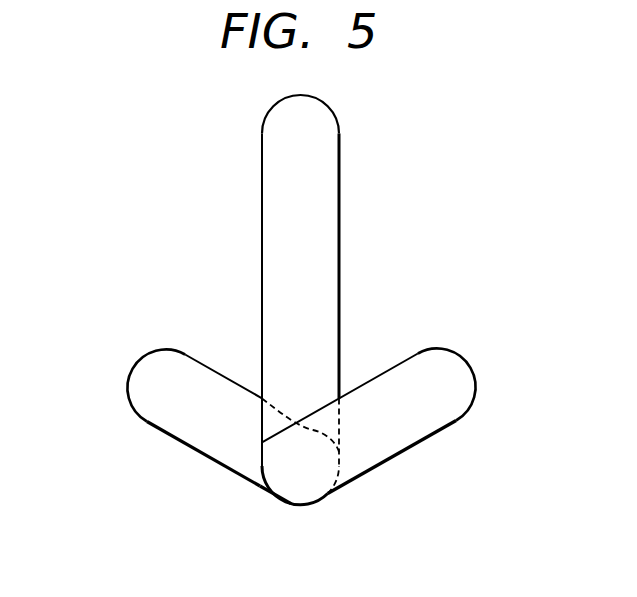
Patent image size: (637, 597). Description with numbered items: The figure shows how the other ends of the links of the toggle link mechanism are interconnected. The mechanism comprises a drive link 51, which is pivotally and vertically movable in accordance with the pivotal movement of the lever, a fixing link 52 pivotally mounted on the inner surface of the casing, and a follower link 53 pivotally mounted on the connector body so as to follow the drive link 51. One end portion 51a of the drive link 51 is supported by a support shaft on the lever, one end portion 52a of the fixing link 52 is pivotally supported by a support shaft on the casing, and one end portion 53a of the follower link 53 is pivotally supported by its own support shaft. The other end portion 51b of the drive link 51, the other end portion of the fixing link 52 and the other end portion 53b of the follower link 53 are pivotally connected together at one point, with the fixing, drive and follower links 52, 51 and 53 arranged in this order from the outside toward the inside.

The drive link 51 is at (341, 250).
The one end portion of the drive link 51a is at (339, 127).
The other end portion of the drive link 51b is at (273, 418).
The fixing link 52 is at (395, 458).
The one end portion of the fixing link 52a is at (465, 378).
The follower link 53 is at (187, 446).
The one end portion of the follower link 53a is at (135, 388).
The other end portion of the follower link 53b is at (255, 481).